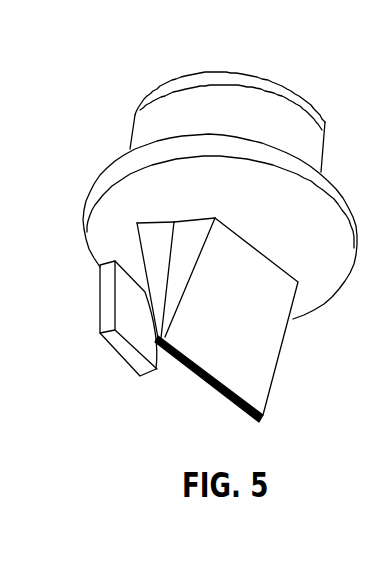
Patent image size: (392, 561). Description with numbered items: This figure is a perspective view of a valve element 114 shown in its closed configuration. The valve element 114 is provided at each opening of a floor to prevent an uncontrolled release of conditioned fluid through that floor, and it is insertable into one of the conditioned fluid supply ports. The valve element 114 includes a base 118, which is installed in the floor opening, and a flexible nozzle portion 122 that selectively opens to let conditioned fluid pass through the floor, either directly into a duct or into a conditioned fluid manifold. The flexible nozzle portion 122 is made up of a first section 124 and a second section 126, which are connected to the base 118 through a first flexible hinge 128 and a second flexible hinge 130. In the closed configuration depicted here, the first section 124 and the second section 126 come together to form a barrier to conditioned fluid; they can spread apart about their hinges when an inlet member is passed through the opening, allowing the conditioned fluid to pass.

The valve element 114 is at (185, 216).
The base 118 is at (163, 127).
The flexible nozzle portion 122 is at (254, 344).
The first section 124 is at (158, 255).
The second section 126 is at (197, 237).
The first flexible hinge 128 is at (147, 231).
The second flexible hinge 130 is at (185, 223).